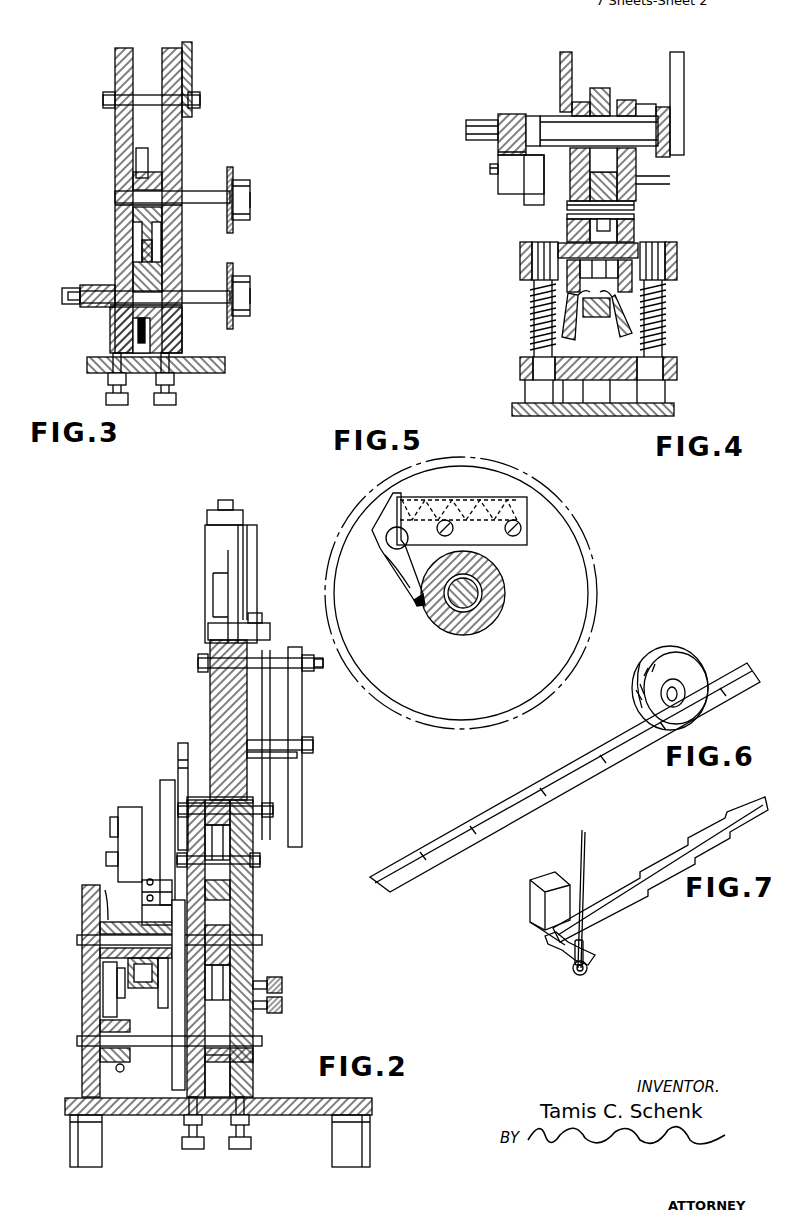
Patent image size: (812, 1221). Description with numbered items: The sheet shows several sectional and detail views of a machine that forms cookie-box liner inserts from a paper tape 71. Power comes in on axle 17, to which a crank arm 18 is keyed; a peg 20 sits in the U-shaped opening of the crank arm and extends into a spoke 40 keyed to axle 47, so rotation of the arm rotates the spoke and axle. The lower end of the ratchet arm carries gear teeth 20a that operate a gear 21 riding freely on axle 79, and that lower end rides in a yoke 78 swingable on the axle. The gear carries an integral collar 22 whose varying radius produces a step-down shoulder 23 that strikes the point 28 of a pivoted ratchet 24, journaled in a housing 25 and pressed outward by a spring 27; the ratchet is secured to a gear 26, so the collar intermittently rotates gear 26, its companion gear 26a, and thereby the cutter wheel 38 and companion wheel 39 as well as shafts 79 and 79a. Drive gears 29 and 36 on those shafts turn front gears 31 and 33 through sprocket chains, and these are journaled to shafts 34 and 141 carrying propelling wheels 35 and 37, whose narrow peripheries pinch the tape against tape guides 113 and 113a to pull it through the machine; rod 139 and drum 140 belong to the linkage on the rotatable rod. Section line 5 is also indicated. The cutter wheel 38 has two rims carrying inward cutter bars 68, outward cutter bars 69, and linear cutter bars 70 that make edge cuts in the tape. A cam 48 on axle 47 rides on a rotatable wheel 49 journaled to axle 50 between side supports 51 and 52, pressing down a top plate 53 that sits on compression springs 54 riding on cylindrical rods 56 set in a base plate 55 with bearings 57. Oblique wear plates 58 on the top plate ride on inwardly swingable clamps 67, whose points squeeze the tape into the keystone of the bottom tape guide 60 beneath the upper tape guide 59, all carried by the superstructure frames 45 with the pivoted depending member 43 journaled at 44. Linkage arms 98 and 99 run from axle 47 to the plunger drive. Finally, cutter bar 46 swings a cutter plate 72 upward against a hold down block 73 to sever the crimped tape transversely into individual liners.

In FIG. 2, the section line 5 is at (158, 897).
In FIG. 4, the axle 17 is at (470, 120).
In FIG. 2, the crank arm 18 is at (118, 822).
In FIG. 4, the peg 20 is at (492, 168).
In FIG. 2, the peg 20 is at (107, 862).
In FIG. 2, the gear teeth 20a is at (116, 986).
In FIG. 2, the gear 21 is at (163, 930).
In FIG. 5, the collar 22 is at (505, 586).
In FIG. 5, the step-down shoulder 23 is at (418, 604).
In FIG. 5, the pivoted ratchet 24 is at (396, 565).
In FIG. 5, the housing 25 is at (525, 540).
In FIG. 5, the gear 26 is at (530, 504).
In FIG. 2, the gear 26 is at (232, 968).
In FIG. 2, the gear 26a is at (174, 1064).
In FIG. 5, the spring 27 is at (465, 497).
In FIG. 5, the point 28 is at (414, 592).
In FIG. 2, the drive gear 29 is at (106, 895).
In FIG. 3, the front gear 31 is at (234, 172).
In FIG. 3, the front gear 33 is at (242, 272).
In FIG. 3, the shaft 34 is at (193, 191).
In FIG. 3, the propelling wheel 35 is at (143, 153).
In FIG. 2, the drive gear 36 is at (110, 1066).
In FIG. 3, the propelling wheel 37 is at (150, 333).
In FIG. 6, the cutter wheel 38 is at (700, 662).
In FIG. 2, the cutter wheel 38 is at (240, 922).
In FIG. 2, the companion wheel 39 is at (236, 1060).
In FIG. 2, the spoke 40 is at (165, 815).
In FIG. 3, the short depending member 43 is at (192, 56).
In FIG. 3, the pivot 44 is at (200, 97).
In FIG. 3, the superstructure frame 45 is at (134, 60).
In FIG. 4, the superstructure frame 45 is at (581, 102).
In FIG. 2, the superstructure frame 45 is at (250, 900).
In FIG. 7, the cutter bar 46 is at (588, 852).
In FIG. 4, the axle 47 is at (555, 118).
In FIG. 4, the cam 48 is at (604, 88).
In FIG. 4, the rotatable wheel 49 is at (604, 180).
In FIG. 4, the axle 50 is at (567, 206).
In FIG. 4, the side support 51 is at (634, 224).
In FIG. 4, the side support 52 is at (570, 232).
In FIG. 4, the top plate 53 is at (672, 262).
In FIG. 4, the compression springs 54 is at (532, 300).
In FIG. 4, the base plate 55 is at (680, 378).
In FIG. 4, the cylindrical rods 56 is at (540, 262).
In FIG. 4, the bearings 57 is at (524, 242).
In FIG. 4, the wear plates 58 is at (638, 250).
In FIG. 4, the tape guide 59 is at (566, 312).
In FIG. 7, the tape guide 59 is at (538, 894).
In FIG. 4, the bottom tape guide 60 is at (632, 318).
In FIG. 4, the clamps 67 is at (618, 326).
In FIG. 6, the cutter bars 68 is at (650, 672).
In FIG. 6, the cutter bars 69 is at (636, 704).
In FIG. 6, the linear cutter bars 70 is at (698, 705).
In FIG. 6, the paper tape 71 is at (460, 836).
In FIG. 7, the paper tape 71 is at (620, 890).
In FIG. 7, the cutter plate 72 is at (552, 950).
In FIG. 7, the hold down block 73 is at (532, 912).
In FIG. 2, the yoke 78 is at (100, 958).
In FIG. 2, the axle 79 is at (85, 940).
In FIG. 2, the shaft 79a is at (90, 1040).
In FIG. 4, the linkage arm 98 is at (652, 104).
In FIG. 4, the companion linkage arm 99 is at (664, 157).
In FIG. 3, the tape guide 113 is at (133, 227).
In FIG. 3, the tape guide 113a is at (137, 253).
In FIG. 3, the rod 139 is at (63, 296).
In FIG. 3, the cylindrical drum 140 is at (100, 262).
In FIG. 3, the shaft 141 is at (200, 291).